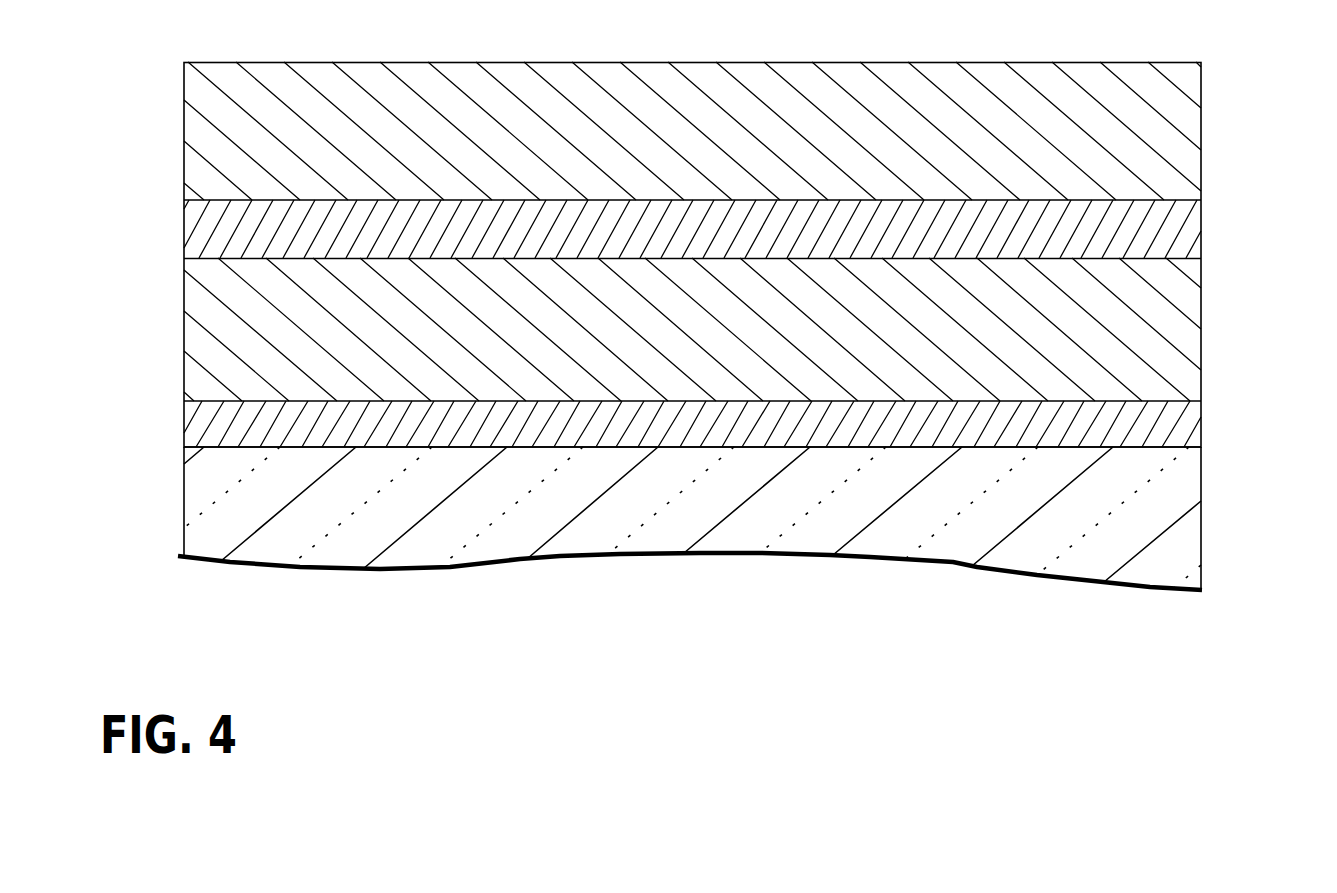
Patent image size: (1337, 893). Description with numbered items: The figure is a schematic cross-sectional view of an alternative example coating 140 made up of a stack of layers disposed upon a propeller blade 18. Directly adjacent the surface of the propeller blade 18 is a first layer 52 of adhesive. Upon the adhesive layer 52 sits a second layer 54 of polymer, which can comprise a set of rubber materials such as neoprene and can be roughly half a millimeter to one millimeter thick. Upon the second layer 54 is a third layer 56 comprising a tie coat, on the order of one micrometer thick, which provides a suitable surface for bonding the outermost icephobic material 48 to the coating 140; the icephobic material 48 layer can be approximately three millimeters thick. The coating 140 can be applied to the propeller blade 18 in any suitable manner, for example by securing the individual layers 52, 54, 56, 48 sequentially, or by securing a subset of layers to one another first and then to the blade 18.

The coating 140 is at (170, 63).
The icephobic material 48 is at (1178, 116).
The third layer 56 is at (1188, 232).
The second layer 54 is at (1183, 344).
The first layer 52 is at (1183, 425).
The propeller blade 18 is at (1185, 541).